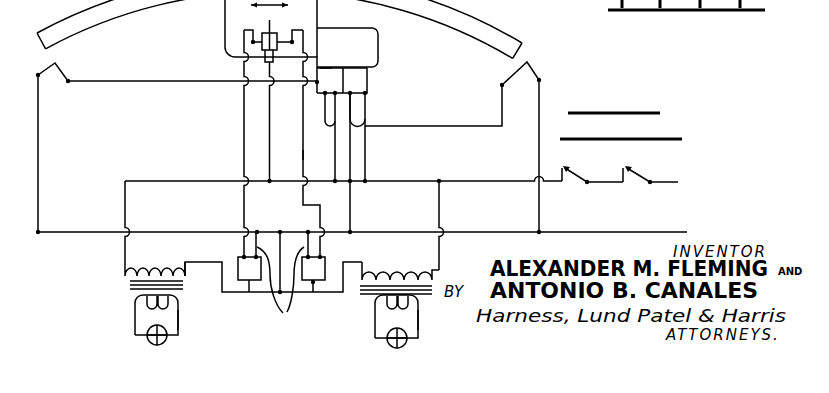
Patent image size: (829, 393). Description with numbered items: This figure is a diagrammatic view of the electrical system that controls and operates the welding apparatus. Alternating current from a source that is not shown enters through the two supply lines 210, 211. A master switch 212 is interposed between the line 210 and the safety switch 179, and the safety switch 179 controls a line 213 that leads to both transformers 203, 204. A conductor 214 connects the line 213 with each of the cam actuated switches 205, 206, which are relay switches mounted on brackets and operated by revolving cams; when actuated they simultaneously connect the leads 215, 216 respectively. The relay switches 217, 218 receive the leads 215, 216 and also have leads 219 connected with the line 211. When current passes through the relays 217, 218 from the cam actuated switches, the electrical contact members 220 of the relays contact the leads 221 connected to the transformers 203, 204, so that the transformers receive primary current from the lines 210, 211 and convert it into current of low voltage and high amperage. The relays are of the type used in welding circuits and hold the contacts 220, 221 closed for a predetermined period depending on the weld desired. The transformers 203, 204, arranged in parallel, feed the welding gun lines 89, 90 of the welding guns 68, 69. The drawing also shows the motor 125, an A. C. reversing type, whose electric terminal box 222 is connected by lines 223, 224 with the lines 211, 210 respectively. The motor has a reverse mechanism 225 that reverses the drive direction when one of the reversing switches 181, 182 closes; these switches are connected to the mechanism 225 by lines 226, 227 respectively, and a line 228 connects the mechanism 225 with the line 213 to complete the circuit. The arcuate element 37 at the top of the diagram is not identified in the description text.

The regulator housing 37 is at (220, 29).
The cam actuated switch 205 is at (267, 30).
The cam actuated switch 206 is at (270, 27).
The motor 125 is at (370, 46).
The reverse mechanism 225 is at (320, 69).
The electric terminal box 222 is at (366, 88).
The line 223 is at (364, 108).
The line 224 is at (367, 133).
The line 227 is at (438, 126).
The reversing switch 182 is at (536, 65).
The reversing switch 181 is at (52, 59).
The line 226 is at (127, 82).
The lead 215 is at (243, 152).
The conductor 214 is at (273, 134).
The lead 216 is at (303, 168).
The line 228 is at (306, 151).
The line 213 is at (159, 185).
The relay switch 217 is at (440, 208).
The line 211 is at (595, 232).
The safety switch 179 is at (560, 186).
The master switch 212 is at (645, 168).
The line 210 is at (677, 183).
The transformer 203 is at (145, 255).
The transformer 204 is at (437, 267).
The lead 221 is at (198, 257).
The relay switch 218 is at (322, 258).
The lead 219 is at (288, 281).
The electrical contact member 220 is at (228, 302).
The welding gun line 89 is at (135, 316).
The welding gun line 90 is at (178, 319).
The welding gun 68 is at (171, 340).
The welding gun 69 is at (385, 343).